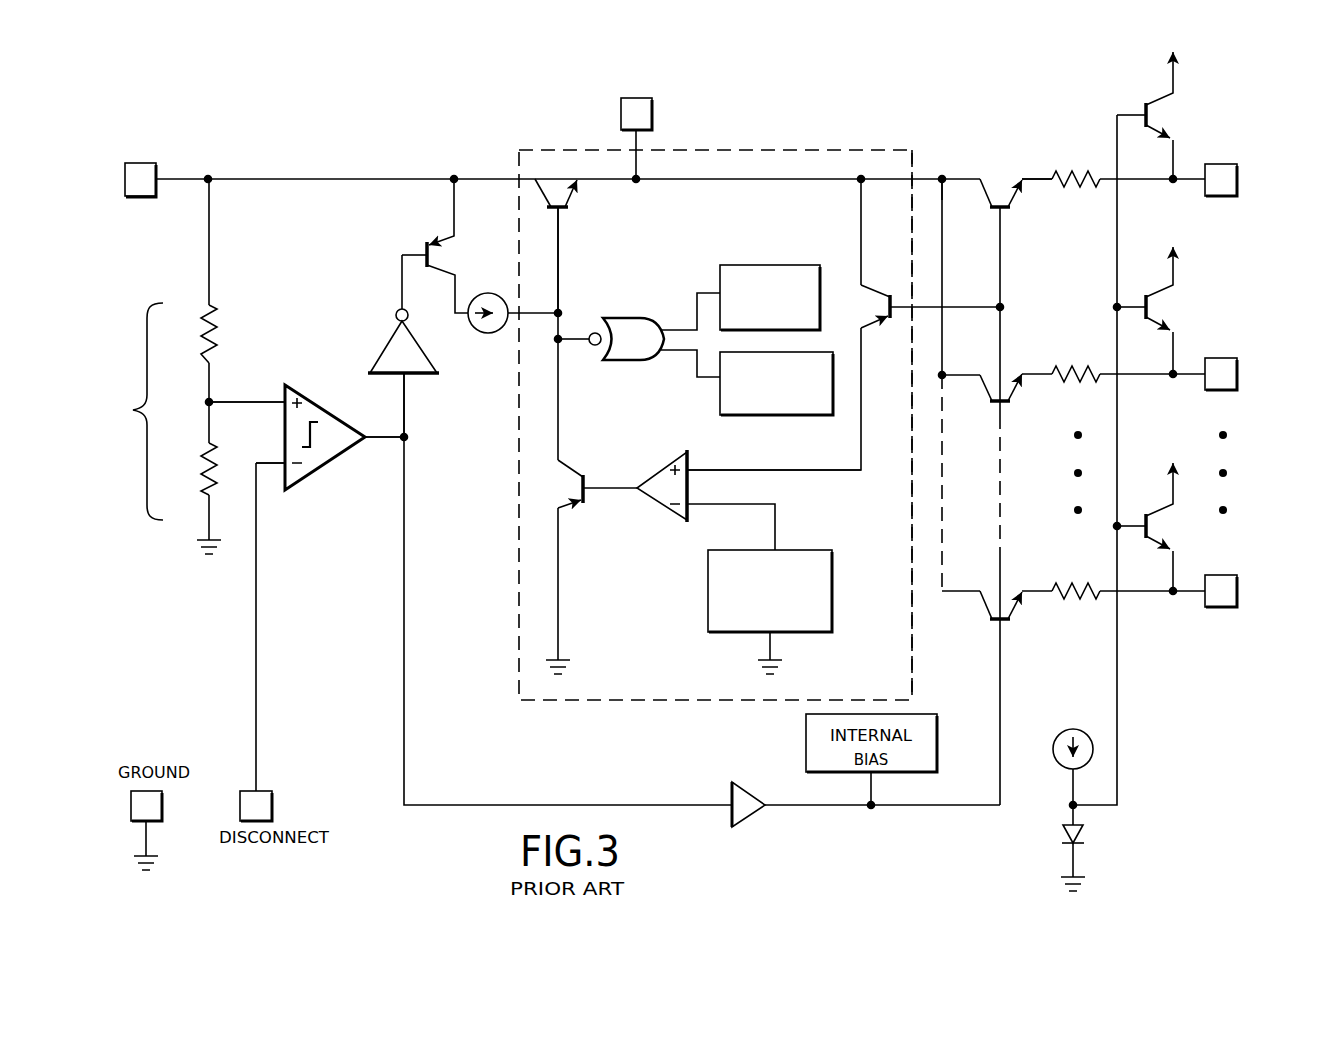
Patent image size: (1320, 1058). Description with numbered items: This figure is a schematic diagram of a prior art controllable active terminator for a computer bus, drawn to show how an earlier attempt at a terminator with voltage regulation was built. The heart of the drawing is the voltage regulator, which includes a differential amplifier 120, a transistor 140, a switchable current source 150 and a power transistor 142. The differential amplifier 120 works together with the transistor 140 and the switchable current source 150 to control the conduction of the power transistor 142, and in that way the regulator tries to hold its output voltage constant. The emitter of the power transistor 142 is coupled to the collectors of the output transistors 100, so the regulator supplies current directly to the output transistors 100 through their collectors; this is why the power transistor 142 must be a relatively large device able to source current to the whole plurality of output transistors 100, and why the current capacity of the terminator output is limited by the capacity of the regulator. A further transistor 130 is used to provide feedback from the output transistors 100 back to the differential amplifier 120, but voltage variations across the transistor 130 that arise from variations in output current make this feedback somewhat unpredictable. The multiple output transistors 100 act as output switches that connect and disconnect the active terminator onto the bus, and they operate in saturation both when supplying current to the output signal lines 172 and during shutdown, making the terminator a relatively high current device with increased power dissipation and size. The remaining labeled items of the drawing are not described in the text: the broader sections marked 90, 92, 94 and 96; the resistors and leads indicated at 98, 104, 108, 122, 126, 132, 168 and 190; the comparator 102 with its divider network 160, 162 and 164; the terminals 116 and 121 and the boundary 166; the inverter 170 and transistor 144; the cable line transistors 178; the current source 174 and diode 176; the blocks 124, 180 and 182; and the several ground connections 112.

The output stage 90 is at (972, 100).
The disconnect circuit 92 is at (356, 138).
The regulator integrated circuit 94 is at (790, 127).
The cable driver section 96 is at (1057, 106).
The resistor 110R 98 is at (1082, 185).
The output transistors 100 is at (1010, 210).
The disconnect comparator 102 is at (315, 392).
The comparator output 104 is at (340, 470).
The comparator inverting input 108 is at (270, 462).
The ground 112 is at (214, 548).
The term power input terminal 116 is at (140, 197).
The differential amplifier 120 is at (665, 512).
The regulator out terminal 121 is at (652, 118).
The reference input line 122 is at (700, 501).
The 2.85V bandgap reference 124 is at (795, 550).
The feedback input line 126 is at (693, 466).
The transistor 130 is at (874, 320).
The drive line 132 is at (608, 486).
The transistor 140 is at (567, 512).
The power transistor 142 is at (570, 208).
The disconnect transistor 144 is at (423, 248).
The switchable current source 150 is at (488, 293).
The voltage divider 160 is at (139, 411).
The upper divider resistor 162 is at (218, 330).
The lower divider resistor 164 is at (206, 497).
The regulator boundary 166 is at (848, 150).
The comparator non-inverting input 168 is at (283, 398).
The inverter 170 is at (435, 365).
The output signal lines 172 is at (1219, 164).
The bias current source 174 is at (1066, 729).
The diode 176 is at (1062, 832).
The cable line transistor 178 is at (1175, 88).
The current limit circuit 180 is at (788, 265).
The thermal shutdown circuit 182 is at (795, 415).
The NOR gate 190 is at (643, 326).